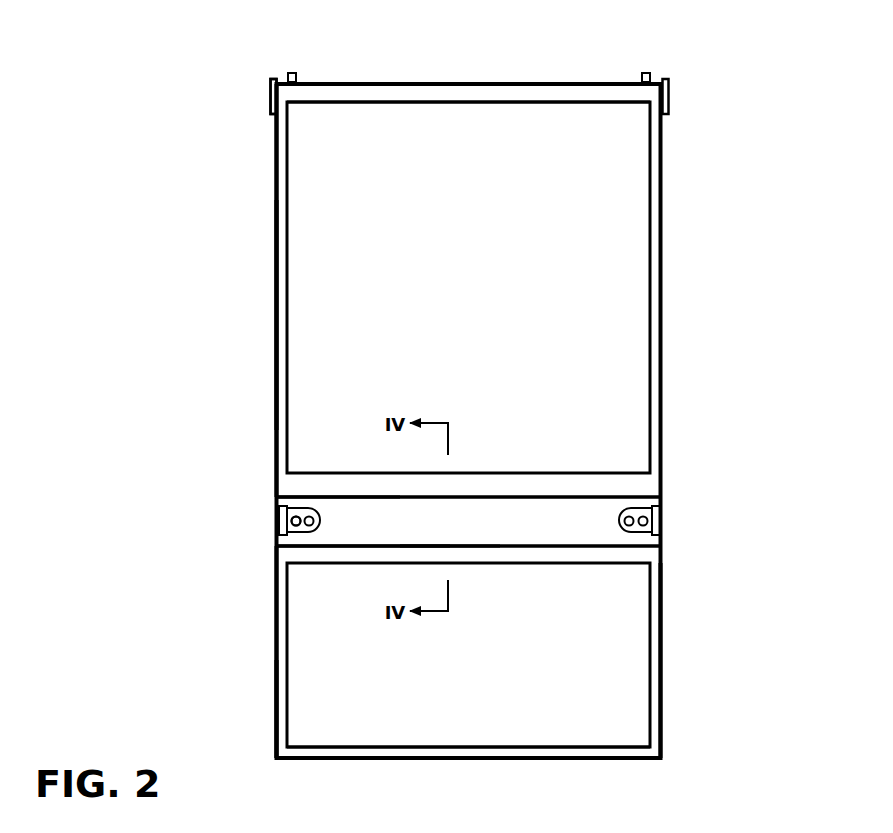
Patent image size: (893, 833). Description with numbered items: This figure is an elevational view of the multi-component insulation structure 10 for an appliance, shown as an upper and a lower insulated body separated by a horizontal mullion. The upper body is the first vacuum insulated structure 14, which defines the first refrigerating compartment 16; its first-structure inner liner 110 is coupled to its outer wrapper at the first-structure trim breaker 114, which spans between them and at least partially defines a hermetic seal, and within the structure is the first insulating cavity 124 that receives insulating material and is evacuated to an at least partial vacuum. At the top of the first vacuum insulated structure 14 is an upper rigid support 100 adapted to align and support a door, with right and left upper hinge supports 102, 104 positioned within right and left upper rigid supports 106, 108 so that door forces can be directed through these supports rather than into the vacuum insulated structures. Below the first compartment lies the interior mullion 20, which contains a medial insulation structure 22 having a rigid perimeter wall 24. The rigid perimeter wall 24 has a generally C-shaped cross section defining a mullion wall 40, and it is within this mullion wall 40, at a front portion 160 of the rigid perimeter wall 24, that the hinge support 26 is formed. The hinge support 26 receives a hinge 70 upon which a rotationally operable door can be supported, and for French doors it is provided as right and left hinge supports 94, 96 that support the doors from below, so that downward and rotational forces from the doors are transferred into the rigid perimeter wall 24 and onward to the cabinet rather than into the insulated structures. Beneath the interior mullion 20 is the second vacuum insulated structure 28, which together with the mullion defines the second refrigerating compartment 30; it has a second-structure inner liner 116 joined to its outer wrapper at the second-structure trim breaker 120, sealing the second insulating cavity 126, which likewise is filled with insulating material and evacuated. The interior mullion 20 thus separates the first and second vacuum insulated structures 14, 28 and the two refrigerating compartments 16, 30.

The multi-component insulation structure 10 is at (727, 248).
The first vacuum insulated structure 14 is at (273, 188).
The first refrigerating compartment 16 is at (602, 222).
The interior mullion 20 is at (580, 487).
The medial insulation structure 22 is at (345, 530).
The rigid perimeter wall 24 is at (567, 547).
The hinge support 26 is at (313, 496).
The second vacuum insulated structure 28 is at (273, 653).
The second refrigerating compartment 30 is at (608, 668).
The mullion wall 40 is at (497, 518).
The hinge 70 is at (280, 517).
The right hinge support 94 is at (642, 505).
The left hinge support 96 is at (293, 533).
The upper rigid support 100 is at (280, 72).
The right upper hinge support 102 is at (648, 73).
The left upper hinge support 104 is at (292, 72).
The right upper rigid support 106 is at (668, 95).
The left upper rigid support 108 is at (267, 93).
The first-structure inner liner 110 is at (393, 135).
The first-structure trim breaker 114 is at (285, 313).
The second-structure inner liner 116 is at (493, 700).
The second-structure trim breaker 120 is at (655, 732).
The first insulating cavity 124 is at (495, 95).
The second insulating cavity 126 is at (283, 698).
The front portion 160 is at (390, 527).